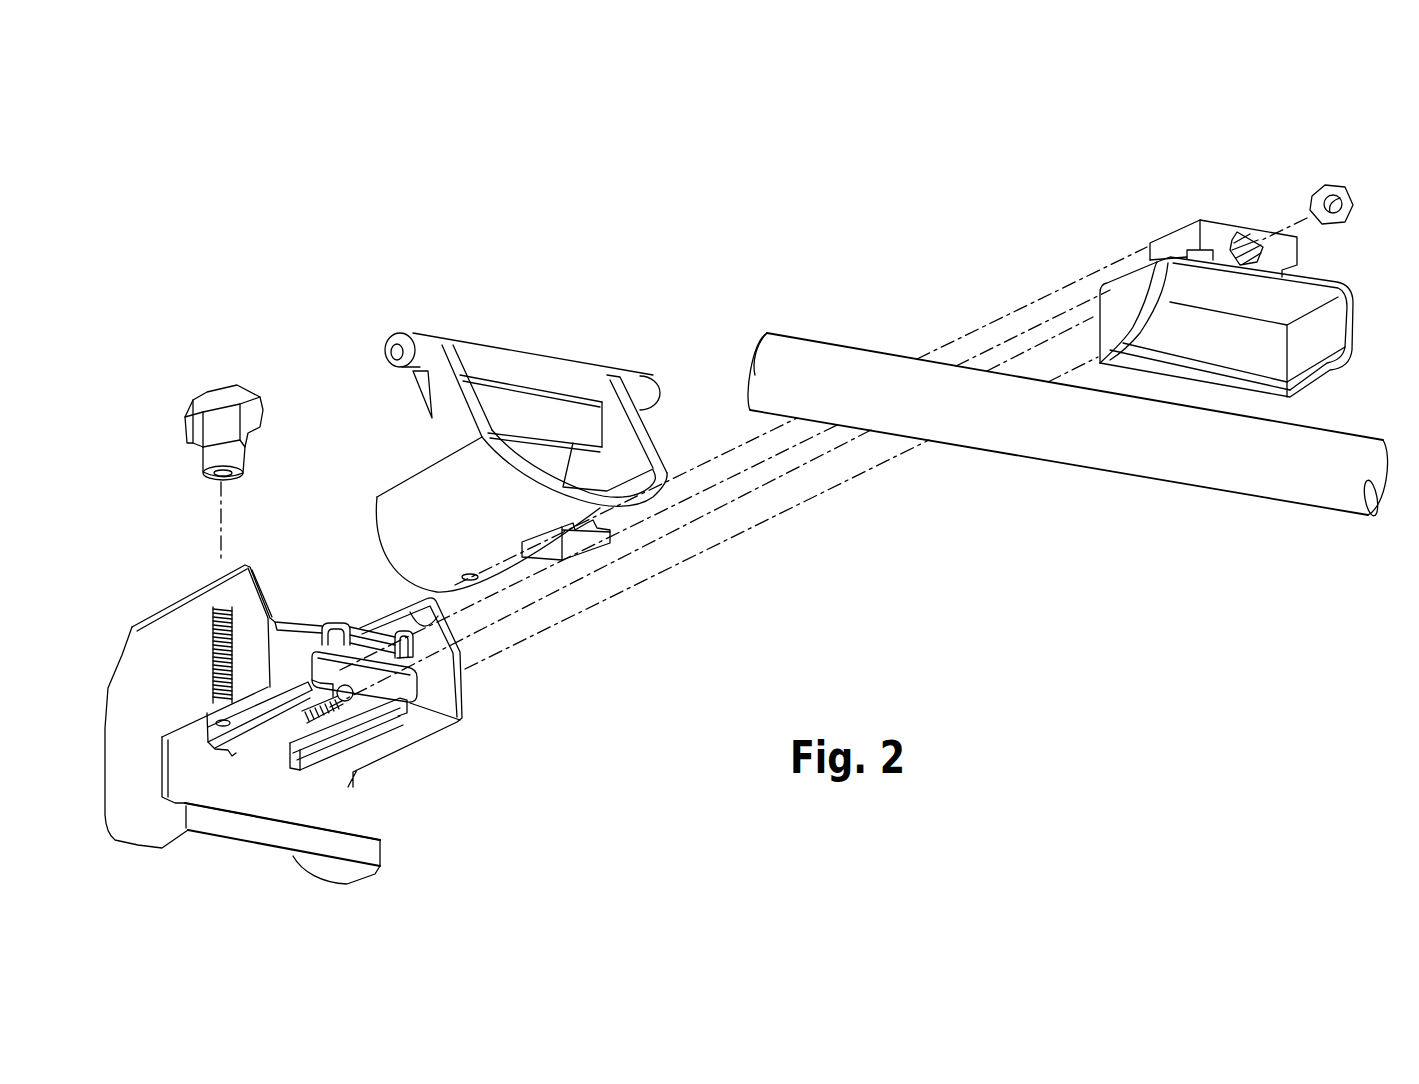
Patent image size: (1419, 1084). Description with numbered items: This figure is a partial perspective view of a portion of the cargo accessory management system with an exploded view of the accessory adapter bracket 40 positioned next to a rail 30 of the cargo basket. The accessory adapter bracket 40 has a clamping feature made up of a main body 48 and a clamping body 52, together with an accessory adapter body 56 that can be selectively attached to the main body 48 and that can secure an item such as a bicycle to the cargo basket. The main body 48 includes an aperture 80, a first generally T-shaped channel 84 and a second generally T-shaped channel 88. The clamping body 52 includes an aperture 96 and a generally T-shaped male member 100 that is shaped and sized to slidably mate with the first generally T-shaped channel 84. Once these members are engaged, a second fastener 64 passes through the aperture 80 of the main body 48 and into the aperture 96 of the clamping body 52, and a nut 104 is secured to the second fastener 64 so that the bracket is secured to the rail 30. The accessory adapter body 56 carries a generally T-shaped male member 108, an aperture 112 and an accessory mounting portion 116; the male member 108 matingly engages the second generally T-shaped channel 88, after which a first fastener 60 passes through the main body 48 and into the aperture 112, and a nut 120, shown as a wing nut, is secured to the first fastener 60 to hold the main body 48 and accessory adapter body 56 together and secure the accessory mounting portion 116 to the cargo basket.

The rail 30 is at (1113, 433).
The accessory adapter bracket 40 is at (643, 648).
The main body 48 is at (165, 647).
The clamping body 52 is at (1133, 293).
The accessory adapter body 56 is at (440, 477).
The first fastener 60 is at (220, 617).
The second fastener 64 is at (354, 690).
The aperture 80 is at (270, 745).
The first generally T-shaped channel 84 is at (356, 712).
The second generally T-shaped channel 88 is at (357, 618).
The aperture 96 is at (1233, 243).
The generally T-shaped male member 100 is at (1180, 238).
The nut 104 is at (1336, 218).
The generally T-shaped male member 108 is at (573, 548).
The aperture 112 is at (473, 580).
The accessory mounting portion 116 is at (428, 348).
The nut 120 is at (228, 400).